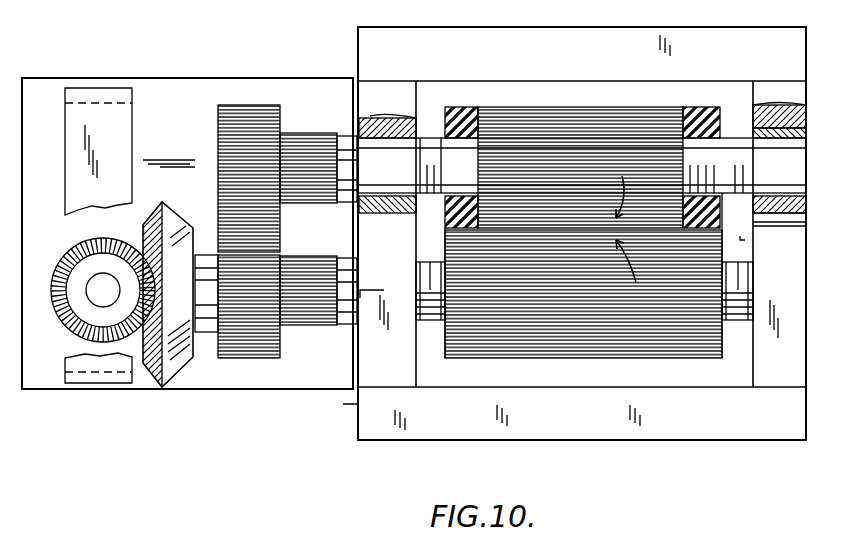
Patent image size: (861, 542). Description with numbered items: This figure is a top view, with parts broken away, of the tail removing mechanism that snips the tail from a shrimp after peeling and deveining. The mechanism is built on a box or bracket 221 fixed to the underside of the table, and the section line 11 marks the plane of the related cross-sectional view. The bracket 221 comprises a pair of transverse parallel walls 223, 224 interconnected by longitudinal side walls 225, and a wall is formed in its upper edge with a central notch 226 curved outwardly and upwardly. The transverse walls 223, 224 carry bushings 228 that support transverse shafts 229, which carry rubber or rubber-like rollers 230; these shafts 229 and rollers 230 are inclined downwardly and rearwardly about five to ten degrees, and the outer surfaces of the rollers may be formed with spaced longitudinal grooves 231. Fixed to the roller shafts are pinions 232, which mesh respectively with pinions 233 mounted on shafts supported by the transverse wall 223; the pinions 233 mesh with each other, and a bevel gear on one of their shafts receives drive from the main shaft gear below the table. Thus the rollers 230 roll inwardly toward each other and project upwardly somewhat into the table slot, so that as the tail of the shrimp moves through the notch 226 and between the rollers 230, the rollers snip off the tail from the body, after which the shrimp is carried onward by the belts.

The section line 11- 11 is at (25, 408).
The box or bracket 221 is at (260, 408).
The transverse parallel wall 223 is at (370, 360).
The transverse parallel wall 224 is at (764, 359).
The longitudinal side walls 225 is at (630, 12).
The central notch 226 is at (776, 228).
The bushings 228 is at (388, 128).
The transverse shafts 229 is at (418, 165).
The rubber or rubber-like rollers 230 is at (515, 120).
The spaced longitudinal grooves 231 is at (545, 350).
The pinions 232 is at (305, 150).
The pinions 233 is at (218, 115).